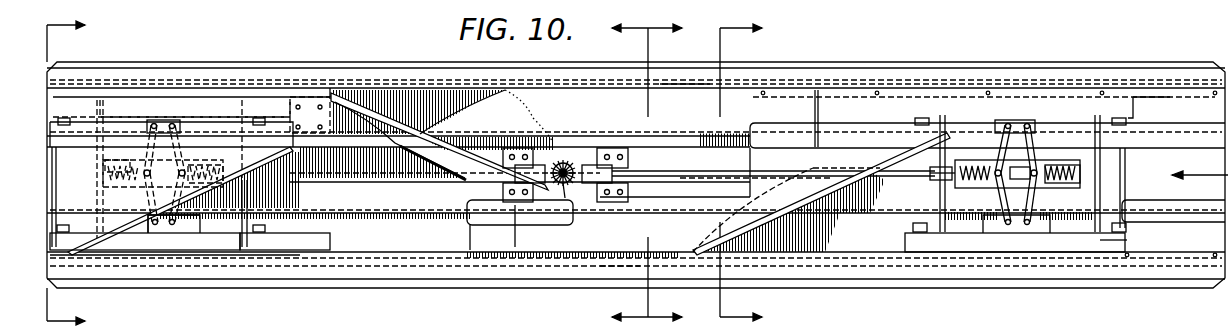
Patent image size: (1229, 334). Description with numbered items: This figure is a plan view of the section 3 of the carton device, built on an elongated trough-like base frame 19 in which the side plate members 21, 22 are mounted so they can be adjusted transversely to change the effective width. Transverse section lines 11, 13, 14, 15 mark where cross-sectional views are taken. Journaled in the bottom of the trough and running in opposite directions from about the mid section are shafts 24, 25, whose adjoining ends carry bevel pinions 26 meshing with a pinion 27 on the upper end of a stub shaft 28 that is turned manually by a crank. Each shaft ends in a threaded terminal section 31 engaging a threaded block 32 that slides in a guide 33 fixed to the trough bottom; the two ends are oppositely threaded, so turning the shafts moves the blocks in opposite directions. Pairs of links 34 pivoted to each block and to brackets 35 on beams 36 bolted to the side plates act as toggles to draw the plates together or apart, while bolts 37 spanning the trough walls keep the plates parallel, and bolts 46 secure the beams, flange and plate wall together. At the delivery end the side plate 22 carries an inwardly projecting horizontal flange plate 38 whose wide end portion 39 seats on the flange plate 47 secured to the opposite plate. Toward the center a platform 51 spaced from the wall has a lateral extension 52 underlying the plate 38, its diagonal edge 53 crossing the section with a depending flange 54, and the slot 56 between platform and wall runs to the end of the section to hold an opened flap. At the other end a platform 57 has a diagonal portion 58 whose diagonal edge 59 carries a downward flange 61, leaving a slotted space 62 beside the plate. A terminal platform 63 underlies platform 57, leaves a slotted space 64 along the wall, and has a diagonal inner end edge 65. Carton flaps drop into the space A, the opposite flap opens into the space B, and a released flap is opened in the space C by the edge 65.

The section 3 is at (973, 62).
The section line 11 is at (84, 174).
The section line 13 is at (759, 172).
The section line 14 is at (616, 172).
The section line 15 is at (681, 172).
The base frame 19 is at (683, 200).
The side plate member 21 is at (613, 265).
The side plate member 22 is at (685, 84).
The shaft 24 is at (370, 178).
The shaft 25 is at (660, 171).
The bevel pinion 26 is at (548, 160).
The pinion 27 is at (567, 186).
The stub shaft 28 is at (566, 163).
The threaded terminal section 31 is at (1060, 182).
The threaded block 32 is at (1030, 168).
The guide 33 is at (975, 160).
The link 34 is at (147, 150).
The bracket 35 is at (168, 121).
The beam 36 is at (290, 110).
The bolt 37 is at (57, 186).
The horizontal flange plate 38 is at (768, 109).
The portion of relatively great width 39 is at (1139, 176).
The bolt 46 is at (255, 127).
The flange plate 47 is at (1188, 250).
The platform 51 is at (480, 234).
The lateral extension 52 is at (767, 162).
The edge 53 is at (815, 196).
The flange 54 is at (717, 216).
The slot 56 is at (538, 255).
The platform 57 is at (130, 108).
The portion 58 is at (427, 147).
The diagonal edge 59 is at (477, 157).
The flange 61 is at (418, 165).
The slotted space 62 is at (215, 95).
The platform 63 is at (78, 222).
The slotted space 64 is at (63, 257).
The inner end edge 65 is at (147, 230).
The space A is at (823, 238).
The space B is at (440, 120).
The space C is at (370, 238).